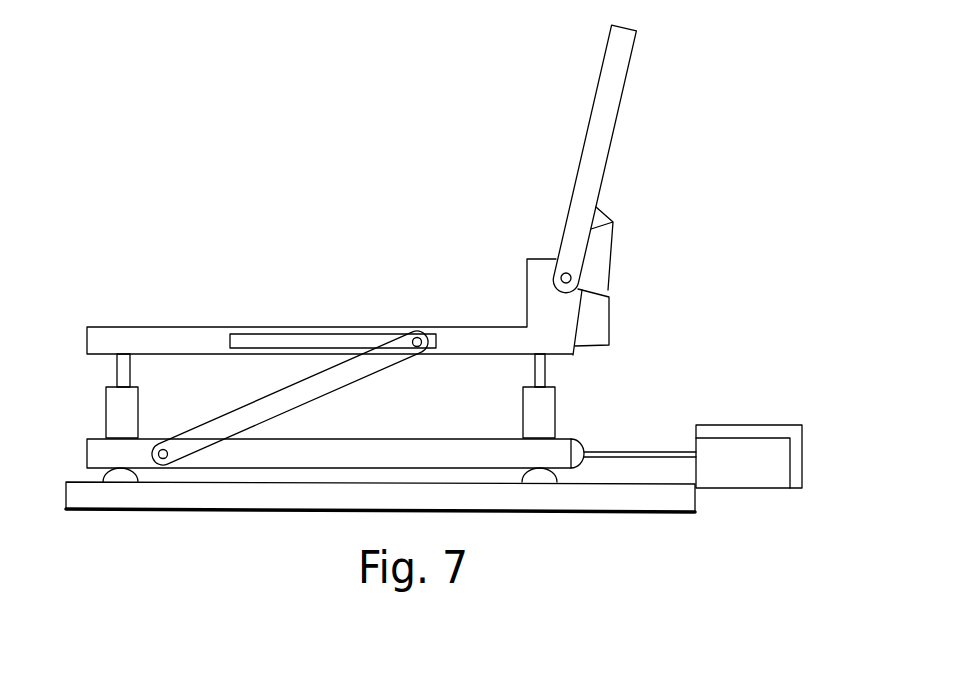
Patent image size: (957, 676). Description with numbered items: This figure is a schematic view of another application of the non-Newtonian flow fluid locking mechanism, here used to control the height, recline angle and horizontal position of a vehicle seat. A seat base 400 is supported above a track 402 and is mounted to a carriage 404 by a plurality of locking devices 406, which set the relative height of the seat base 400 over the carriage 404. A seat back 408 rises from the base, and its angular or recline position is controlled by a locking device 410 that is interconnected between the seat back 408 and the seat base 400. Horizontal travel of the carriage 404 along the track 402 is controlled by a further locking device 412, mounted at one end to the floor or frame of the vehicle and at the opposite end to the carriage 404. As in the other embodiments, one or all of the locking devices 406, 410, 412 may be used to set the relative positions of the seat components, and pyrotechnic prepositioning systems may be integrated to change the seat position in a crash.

The seat base 400 is at (192, 332).
The track 402 is at (265, 497).
The carriage 404 is at (372, 450).
The locking devices 406 is at (120, 403).
The seat back 408 is at (603, 121).
The locking device 410 is at (598, 322).
The locking device 412 is at (740, 430).